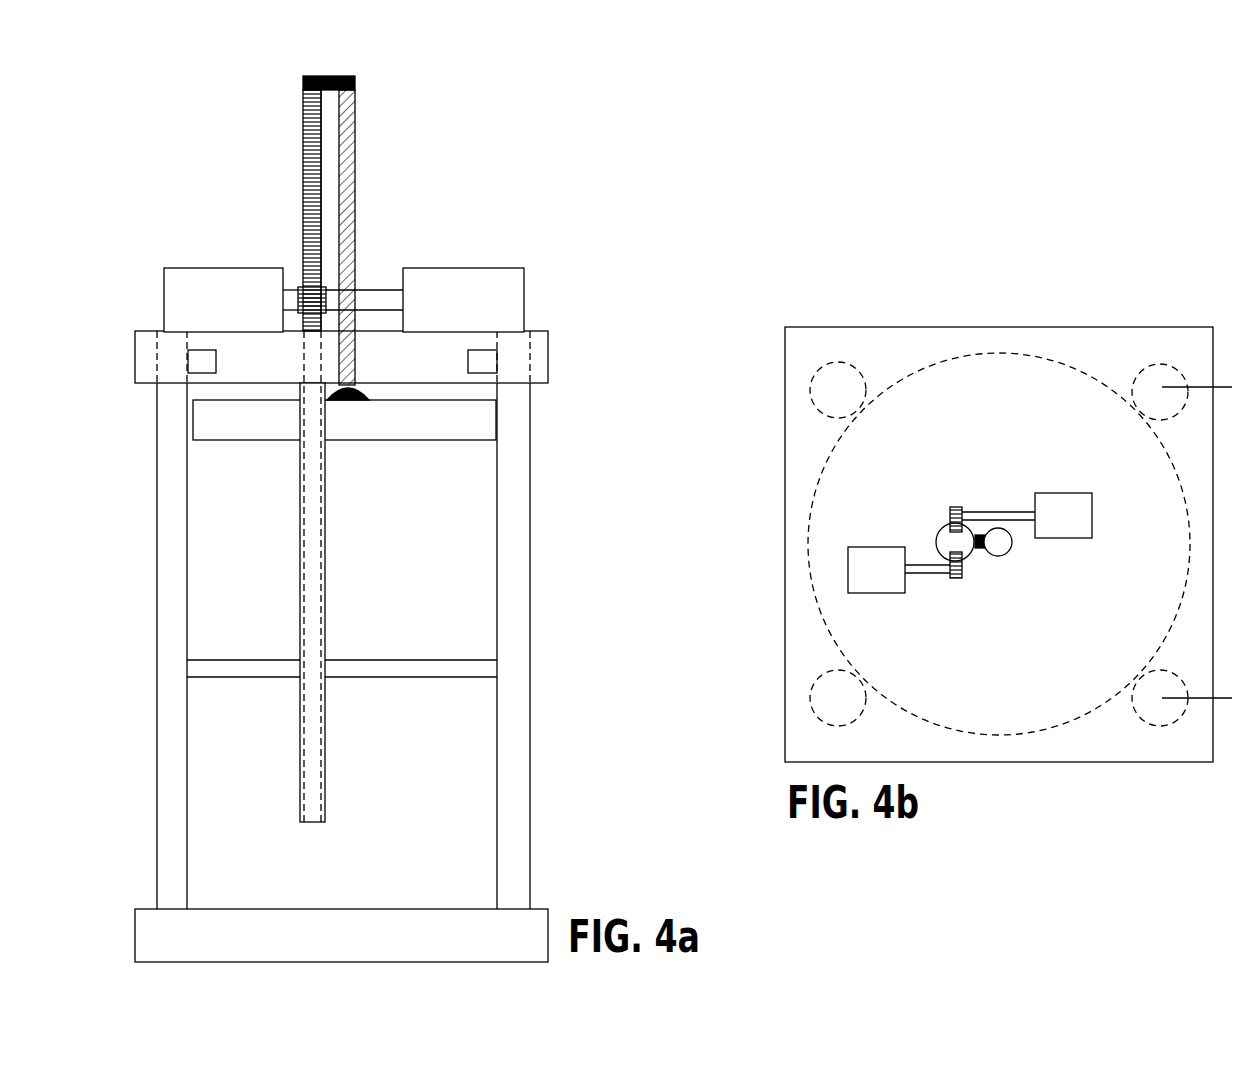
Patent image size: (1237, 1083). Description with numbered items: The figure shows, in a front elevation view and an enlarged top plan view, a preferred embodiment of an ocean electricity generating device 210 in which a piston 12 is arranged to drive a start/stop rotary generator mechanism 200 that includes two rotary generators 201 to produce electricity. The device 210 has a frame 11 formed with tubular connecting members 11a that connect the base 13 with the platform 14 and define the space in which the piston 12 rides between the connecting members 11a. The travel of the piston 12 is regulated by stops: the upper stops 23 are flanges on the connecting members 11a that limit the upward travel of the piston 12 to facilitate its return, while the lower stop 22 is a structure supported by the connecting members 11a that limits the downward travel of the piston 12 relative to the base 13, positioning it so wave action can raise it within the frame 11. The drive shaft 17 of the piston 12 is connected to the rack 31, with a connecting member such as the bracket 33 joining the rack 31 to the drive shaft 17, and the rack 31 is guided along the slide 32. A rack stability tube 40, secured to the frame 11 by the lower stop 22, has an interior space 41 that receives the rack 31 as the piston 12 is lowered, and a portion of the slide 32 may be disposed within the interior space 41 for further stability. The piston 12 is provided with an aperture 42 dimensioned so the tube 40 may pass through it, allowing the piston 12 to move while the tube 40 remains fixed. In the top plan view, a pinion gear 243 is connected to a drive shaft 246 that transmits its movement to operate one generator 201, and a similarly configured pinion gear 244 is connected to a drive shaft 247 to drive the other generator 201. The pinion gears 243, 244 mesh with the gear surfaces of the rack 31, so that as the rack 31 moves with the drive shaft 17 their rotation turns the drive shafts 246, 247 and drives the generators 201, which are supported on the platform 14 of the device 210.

In FIG. 4A, the frame 11 is at (536, 648).
In FIG. 4A, the connecting members 11a is at (180, 513).
In FIG. 4B, the connecting members 11a is at (833, 390).
In FIG. 4A, the piston 12 is at (218, 423).
In FIG. 4B, the piston 12 is at (1088, 713).
In FIG. 4A, the base 13 is at (155, 941).
In FIG. 4A, the platform 14 is at (540, 330).
In FIG. 4B, the platform 14 is at (785, 578).
In FIG. 4A, the drive shaft 17 is at (350, 205).
In FIG. 4B, the drive shaft 17 is at (1006, 548).
In FIG. 4A, the lower stop 22 is at (218, 680).
In FIG. 4A, the upper stops 23 is at (200, 362).
In FIG. 4A, the rack 31 is at (321, 213).
In FIG. 4A, the slide 32 is at (303, 178).
In FIG. 4A, the bracket 33 is at (356, 82).
In FIG. 4A, the rack stability tube 40 is at (322, 619).
In FIG. 4B, the rack stability tube 40 is at (975, 552).
In FIG. 4A, the interior space 41 is at (312, 600).
In FIG. 4A, the aperture 42 is at (318, 425).
In FIG. 4A, the start/stop rotary generator mechanism 200 is at (223, 252).
In FIG. 4B, the start/stop rotary generator mechanism 200 is at (905, 518).
In FIG. 4A, the rotary generators 201 is at (180, 284).
In FIG. 4B, the rotary generators 201 is at (1060, 500).
In FIG. 4A, the ocean electricity generating device 210 is at (157, 325).
In FIG. 4B, the ocean electricity generating device 210 is at (1117, 303).
In FIG. 4B, the pinion gear 243 is at (955, 507).
In FIG. 4A, the pinion gear 244 is at (306, 312).
In FIG. 4B, the pinion gear 244 is at (958, 578).
In FIG. 4A, the drive shaft 246 is at (380, 300).
In FIG. 4B, the drive shaft 246 is at (1010, 512).
In FIG. 4A, the drive shaft 247 is at (293, 300).
In FIG. 4B, the drive shaft 247 is at (938, 577).